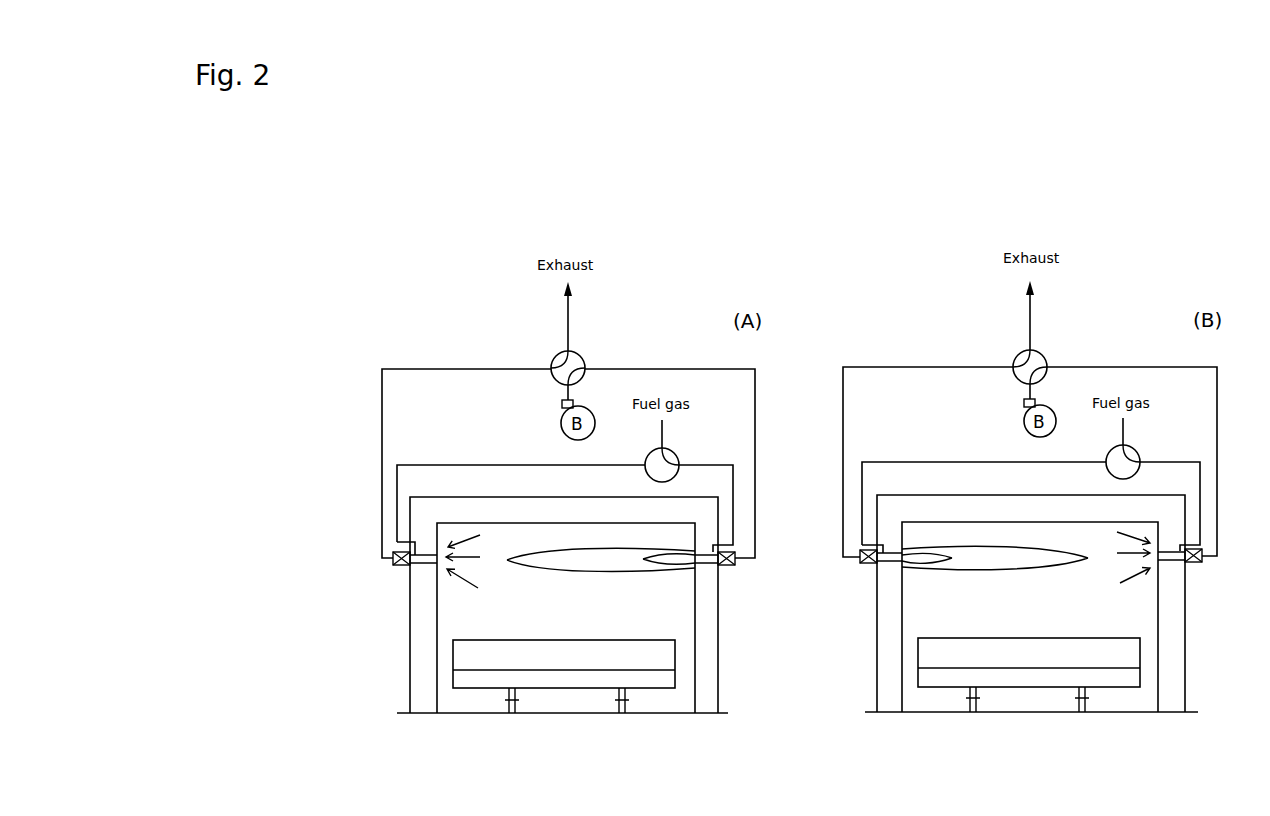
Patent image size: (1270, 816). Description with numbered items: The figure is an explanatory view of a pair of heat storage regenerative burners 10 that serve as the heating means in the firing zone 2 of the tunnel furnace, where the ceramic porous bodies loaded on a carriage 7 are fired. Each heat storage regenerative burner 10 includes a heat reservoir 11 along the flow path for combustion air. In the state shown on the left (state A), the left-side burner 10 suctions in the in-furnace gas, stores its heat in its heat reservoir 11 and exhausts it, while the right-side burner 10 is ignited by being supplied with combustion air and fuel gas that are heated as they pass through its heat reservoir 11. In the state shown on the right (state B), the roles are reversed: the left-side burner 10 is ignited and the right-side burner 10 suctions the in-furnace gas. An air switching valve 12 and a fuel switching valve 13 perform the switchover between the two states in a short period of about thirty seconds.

The firing zone 2 is at (513, 530).
The carriage 7 is at (584, 653).
The heat storage regenerative burner 10 is at (428, 563).
The heat reservoir 11 is at (400, 566).
The air switching valve 12 is at (583, 352).
The fuel switching valve 13 is at (677, 453).